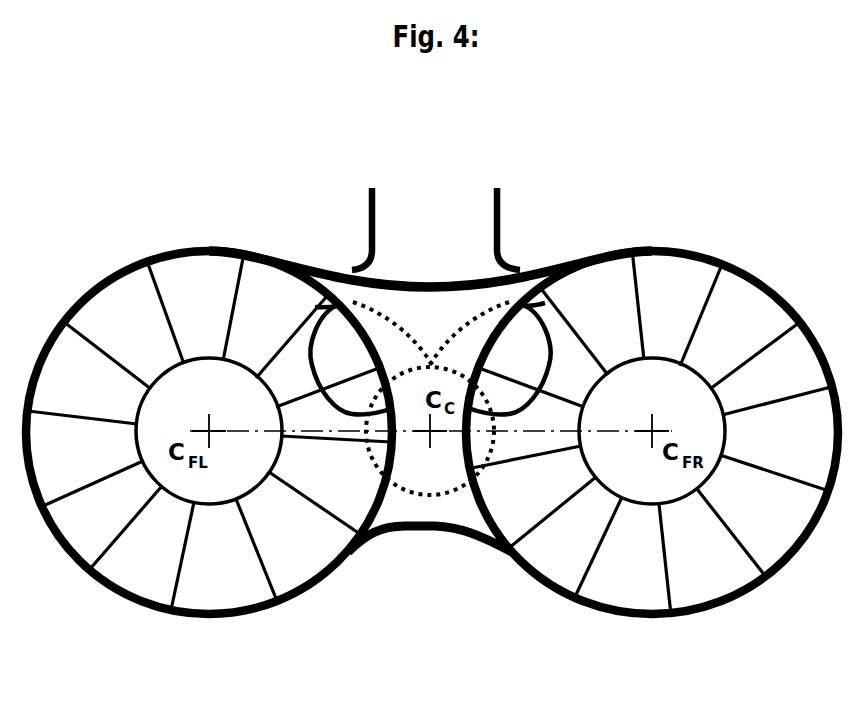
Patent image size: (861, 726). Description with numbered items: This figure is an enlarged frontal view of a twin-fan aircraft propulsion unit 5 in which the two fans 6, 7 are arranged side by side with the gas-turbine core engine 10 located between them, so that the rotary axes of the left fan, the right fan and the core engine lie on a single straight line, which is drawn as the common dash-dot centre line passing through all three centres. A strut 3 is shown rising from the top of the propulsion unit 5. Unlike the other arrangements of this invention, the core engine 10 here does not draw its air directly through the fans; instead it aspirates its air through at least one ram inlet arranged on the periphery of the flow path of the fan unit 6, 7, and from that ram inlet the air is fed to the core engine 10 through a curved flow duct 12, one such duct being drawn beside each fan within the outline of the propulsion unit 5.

The strut 3 is at (460, 240).
The aircraft propulsion unit 5 is at (441, 584).
The fan 6 is at (138, 608).
The fan 7 is at (698, 613).
The gas-turbine core engine 10 is at (410, 405).
The curved flow duct 12 is at (340, 343).